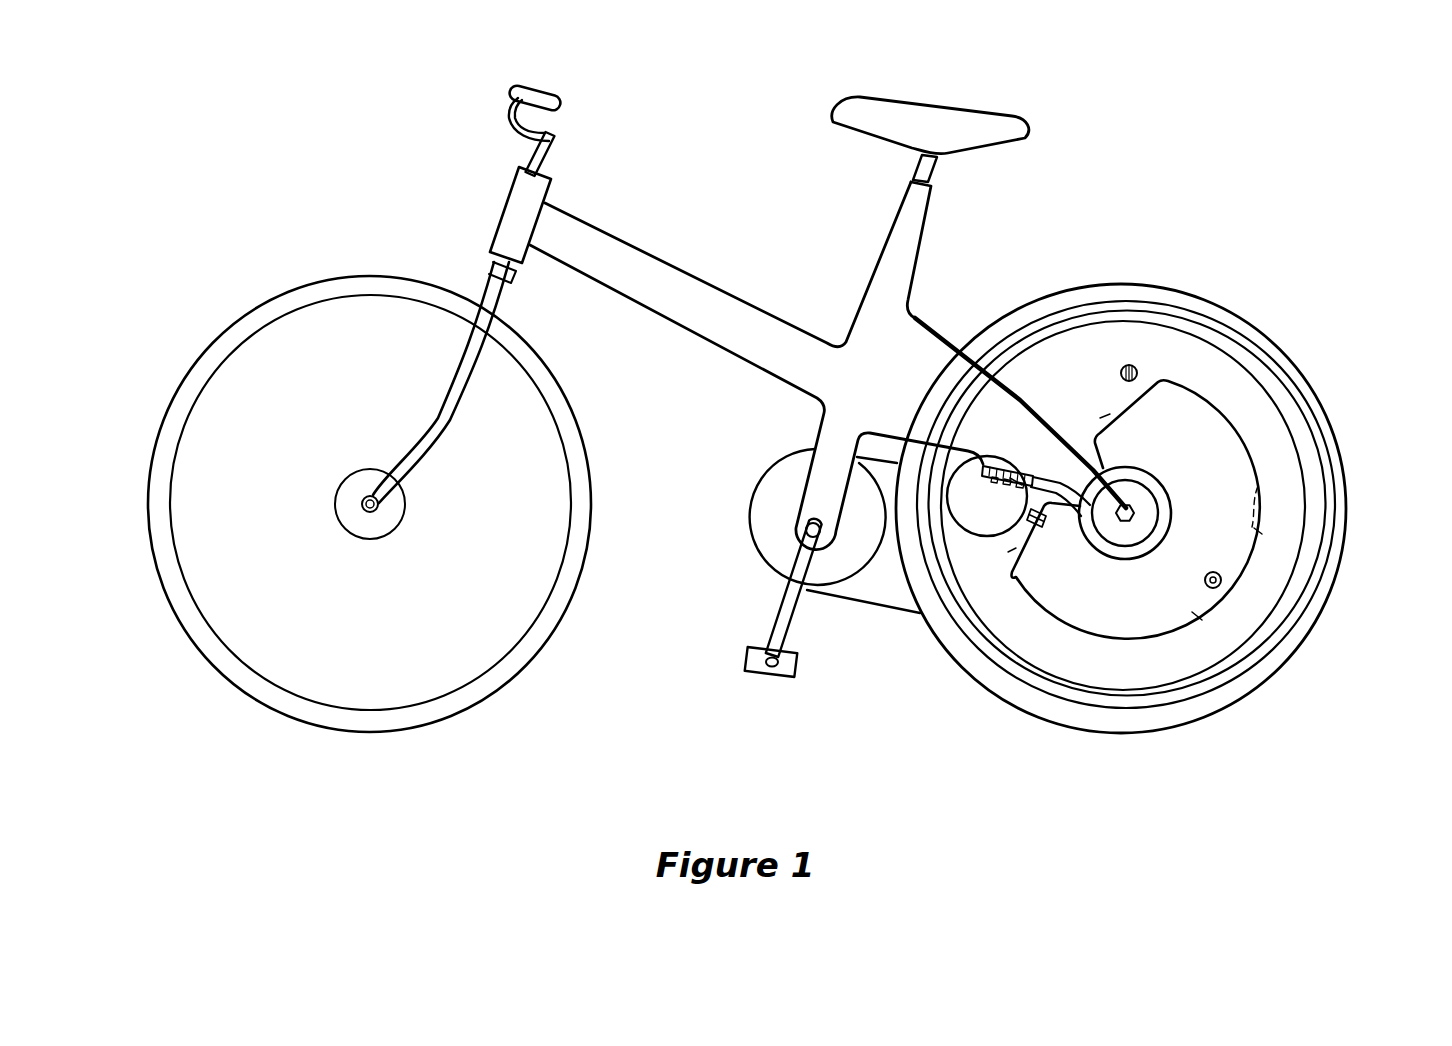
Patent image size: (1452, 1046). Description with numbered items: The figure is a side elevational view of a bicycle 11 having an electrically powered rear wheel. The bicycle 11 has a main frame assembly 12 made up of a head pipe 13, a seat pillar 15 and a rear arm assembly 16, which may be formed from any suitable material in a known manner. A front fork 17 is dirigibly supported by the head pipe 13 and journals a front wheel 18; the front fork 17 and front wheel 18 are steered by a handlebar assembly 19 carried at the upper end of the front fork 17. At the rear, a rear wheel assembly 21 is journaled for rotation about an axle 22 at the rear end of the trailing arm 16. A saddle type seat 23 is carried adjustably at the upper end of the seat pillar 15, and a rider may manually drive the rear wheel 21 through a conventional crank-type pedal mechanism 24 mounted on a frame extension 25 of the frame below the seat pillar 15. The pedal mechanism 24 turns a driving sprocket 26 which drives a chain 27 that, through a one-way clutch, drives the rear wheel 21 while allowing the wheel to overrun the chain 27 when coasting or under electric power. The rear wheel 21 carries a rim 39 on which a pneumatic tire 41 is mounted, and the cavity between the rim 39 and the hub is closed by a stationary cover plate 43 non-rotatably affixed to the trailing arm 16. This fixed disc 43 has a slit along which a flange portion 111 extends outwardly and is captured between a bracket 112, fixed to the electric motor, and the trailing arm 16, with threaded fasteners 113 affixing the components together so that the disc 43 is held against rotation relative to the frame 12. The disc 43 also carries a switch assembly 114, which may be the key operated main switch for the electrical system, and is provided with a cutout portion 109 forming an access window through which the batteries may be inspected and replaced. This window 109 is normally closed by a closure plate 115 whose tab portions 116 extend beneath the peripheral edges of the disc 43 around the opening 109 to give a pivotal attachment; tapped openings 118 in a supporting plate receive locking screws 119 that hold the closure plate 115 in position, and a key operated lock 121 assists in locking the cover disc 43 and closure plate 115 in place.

The bicycle 11 is at (697, 250).
The main frame assembly 12 is at (638, 268).
The head pipe 13 is at (518, 212).
The seat pillar 15 is at (915, 230).
The rear arm assembly 16 is at (928, 345).
The front fork 17 is at (431, 433).
The front wheel 18 is at (280, 303).
The handlebar assembly 19 is at (535, 88).
The rear wheel assembly 21 is at (1158, 284).
The axle 22 is at (1137, 508).
The saddle type seat 23 is at (918, 115).
The pedal mechanism 24 is at (783, 613).
The frame extension 25 is at (828, 462).
The driving sprocket 26 is at (763, 505).
The chain 27 is at (820, 598).
The rim 39 is at (1298, 602).
The pneumatic tire 41 is at (1288, 645).
The stationary cover plate 43 is at (1068, 343).
The cutout portion 109 is at (1197, 617).
The flange portion 111 is at (1000, 473).
The bracket 112 is at (1018, 483).
The threaded fasteners 113 is at (955, 468).
The switch assembly 114 is at (1142, 369).
The closure plate 115 is at (1215, 423).
The tab portions 116 is at (1108, 418).
The tapped openings 118 is at (1258, 486).
The locking screws 119 is at (1258, 531).
The key operated lock 121 is at (1210, 573).